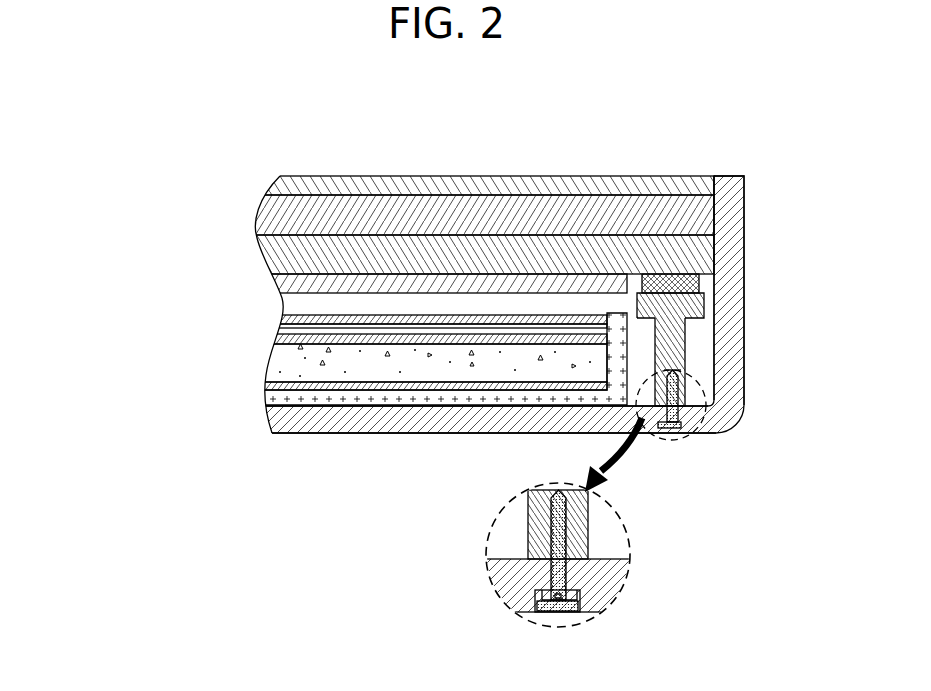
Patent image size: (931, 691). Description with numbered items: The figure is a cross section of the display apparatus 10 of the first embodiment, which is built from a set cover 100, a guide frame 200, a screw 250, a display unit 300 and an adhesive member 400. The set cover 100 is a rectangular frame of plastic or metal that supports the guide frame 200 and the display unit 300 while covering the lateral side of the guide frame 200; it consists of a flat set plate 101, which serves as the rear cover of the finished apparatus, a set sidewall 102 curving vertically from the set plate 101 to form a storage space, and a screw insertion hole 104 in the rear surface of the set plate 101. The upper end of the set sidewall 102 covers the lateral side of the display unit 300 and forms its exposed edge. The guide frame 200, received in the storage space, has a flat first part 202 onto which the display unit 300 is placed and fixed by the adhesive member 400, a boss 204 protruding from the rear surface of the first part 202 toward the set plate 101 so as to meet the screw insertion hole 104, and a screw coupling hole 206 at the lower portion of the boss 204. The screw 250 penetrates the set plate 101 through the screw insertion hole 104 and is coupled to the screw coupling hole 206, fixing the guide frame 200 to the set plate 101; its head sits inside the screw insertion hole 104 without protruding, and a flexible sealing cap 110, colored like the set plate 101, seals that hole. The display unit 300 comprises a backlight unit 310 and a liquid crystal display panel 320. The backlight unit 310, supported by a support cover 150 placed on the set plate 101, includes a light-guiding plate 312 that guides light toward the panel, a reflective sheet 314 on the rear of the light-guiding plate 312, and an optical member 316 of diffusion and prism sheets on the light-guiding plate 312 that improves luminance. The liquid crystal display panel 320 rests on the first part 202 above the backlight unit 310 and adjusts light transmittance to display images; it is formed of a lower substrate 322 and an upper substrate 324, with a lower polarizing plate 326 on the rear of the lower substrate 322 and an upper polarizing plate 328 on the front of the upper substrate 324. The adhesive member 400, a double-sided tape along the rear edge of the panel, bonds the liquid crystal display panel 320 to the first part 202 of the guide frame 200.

The display apparatus 10 is at (459, 151).
The set cover 100 is at (758, 431).
The set plate 101 is at (267, 430).
The set sidewall 102 is at (730, 214).
The screw insertion hole 104 is at (581, 594).
The sealing cap 110 is at (537, 607).
The support cover 150 is at (262, 397).
The guide frame 200 is at (654, 446).
The first part 202 is at (697, 306).
The boss 204 is at (681, 333).
The screw coupling hole 206 is at (673, 369).
The screw 250 is at (564, 534).
The display unit 300 is at (373, 279).
The backlight unit 310 is at (351, 356).
The light-guiding plate 312 is at (268, 366).
The reflective sheet 314 is at (264, 385).
The optical member 316 is at (282, 338).
The liquid crystal display panel 320 is at (408, 226).
The lower substrate 322 is at (282, 257).
The upper substrate 324 is at (282, 218).
The lower polarizing plate 326 is at (284, 290).
The upper polarizing plate 328 is at (282, 187).
The adhesive member 400 is at (697, 285).